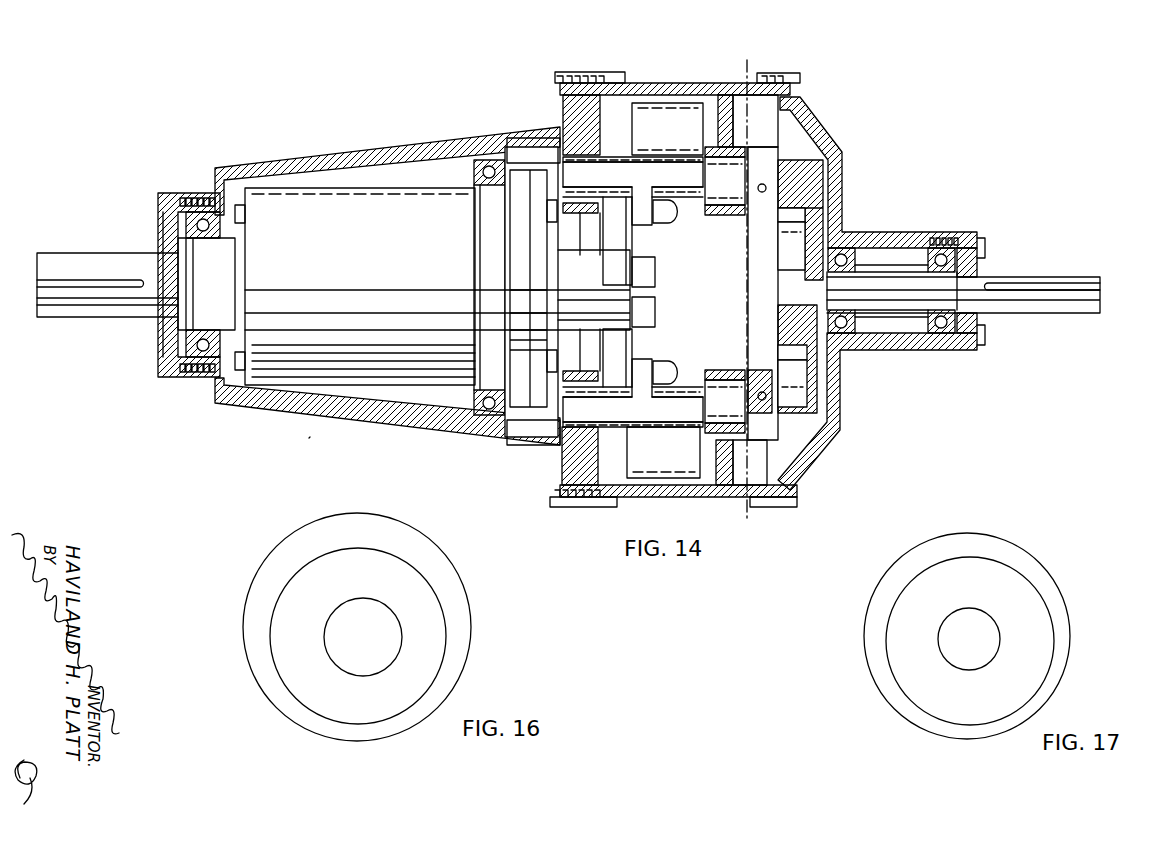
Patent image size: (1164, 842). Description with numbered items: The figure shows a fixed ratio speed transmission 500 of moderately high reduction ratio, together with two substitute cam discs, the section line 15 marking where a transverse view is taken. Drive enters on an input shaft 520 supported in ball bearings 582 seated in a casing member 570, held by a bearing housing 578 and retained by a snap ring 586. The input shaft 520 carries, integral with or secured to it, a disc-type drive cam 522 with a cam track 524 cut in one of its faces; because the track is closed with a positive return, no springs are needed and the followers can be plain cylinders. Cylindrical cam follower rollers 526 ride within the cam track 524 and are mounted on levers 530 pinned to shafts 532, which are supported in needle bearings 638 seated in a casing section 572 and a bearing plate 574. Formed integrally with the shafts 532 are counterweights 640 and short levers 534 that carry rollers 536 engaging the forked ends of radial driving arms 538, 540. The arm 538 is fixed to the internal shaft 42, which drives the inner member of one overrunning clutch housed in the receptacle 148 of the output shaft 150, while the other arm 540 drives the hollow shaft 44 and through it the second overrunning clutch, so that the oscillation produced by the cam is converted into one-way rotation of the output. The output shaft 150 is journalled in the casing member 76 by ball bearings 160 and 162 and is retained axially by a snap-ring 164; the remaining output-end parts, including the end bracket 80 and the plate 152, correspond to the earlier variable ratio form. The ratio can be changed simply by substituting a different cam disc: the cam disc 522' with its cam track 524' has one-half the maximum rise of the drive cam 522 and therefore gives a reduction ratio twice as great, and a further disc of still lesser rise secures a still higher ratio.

In FIG. 14, the section line 15- 15 is at (747, 48).
In FIG. 14, the internal shaft 42 is at (610, 305).
In FIG. 14, the hollow shaft 44 is at (605, 292).
In FIG. 14, the casing member 76 is at (376, 154).
In FIG. 14, the end bracket 80 is at (180, 192).
In FIG. 14, the receptacle 148 is at (330, 204).
In FIG. 14, the output shaft 150 is at (106, 262).
In FIG. 14, the end plate 152 is at (556, 410).
In FIG. 14, the ball bearing 160 is at (164, 220).
In FIG. 14, the ball bearing 162 is at (470, 172).
In FIG. 14, the snap-ring 164 is at (180, 260).
In FIG. 14, the transmission 500 is at (308, 438).
In FIG. 14, the input shaft 520 is at (1020, 272).
In FIG. 14, the drive cam 522 is at (834, 286).
In FIG. 14, the cam track 524 is at (834, 274).
In FIG. 14, the cam follower roller 526 is at (796, 240).
In FIG. 14, the lever 530 is at (767, 176).
In FIG. 14, the shaft 532 is at (718, 178).
In FIG. 14, the short lever 534 is at (655, 218).
In FIG. 14, the roller 536 is at (630, 215).
In FIG. 14, the radial driving arm 538 is at (655, 327).
In FIG. 14, the radial driving arm 540 is at (655, 262).
In FIG. 14, the casing member 570 is at (832, 158).
In FIG. 14, the casing section 572 is at (670, 84).
In FIG. 14, the bearing plate 574 is at (560, 474).
In FIG. 14, the bearing housing 578 is at (984, 256).
In FIG. 14, the ball bearing 582 is at (926, 262).
In FIG. 14, the snap ring 586 is at (955, 285).
In FIG. 14, the needle bearing 638 is at (564, 163).
In FIG. 14, the counterweight 640 is at (640, 122).
In FIG. 16, the cam disc 522' is at (376, 627).
In FIG. 16, the cam track 524' is at (396, 636).